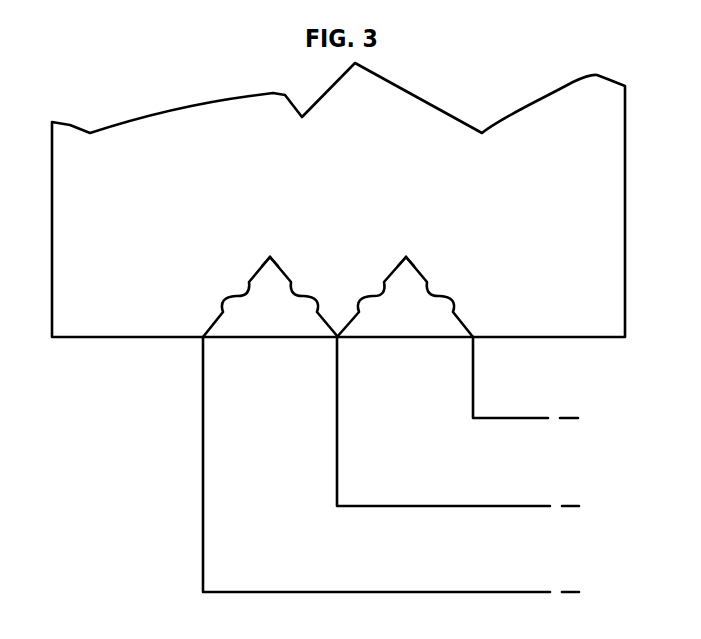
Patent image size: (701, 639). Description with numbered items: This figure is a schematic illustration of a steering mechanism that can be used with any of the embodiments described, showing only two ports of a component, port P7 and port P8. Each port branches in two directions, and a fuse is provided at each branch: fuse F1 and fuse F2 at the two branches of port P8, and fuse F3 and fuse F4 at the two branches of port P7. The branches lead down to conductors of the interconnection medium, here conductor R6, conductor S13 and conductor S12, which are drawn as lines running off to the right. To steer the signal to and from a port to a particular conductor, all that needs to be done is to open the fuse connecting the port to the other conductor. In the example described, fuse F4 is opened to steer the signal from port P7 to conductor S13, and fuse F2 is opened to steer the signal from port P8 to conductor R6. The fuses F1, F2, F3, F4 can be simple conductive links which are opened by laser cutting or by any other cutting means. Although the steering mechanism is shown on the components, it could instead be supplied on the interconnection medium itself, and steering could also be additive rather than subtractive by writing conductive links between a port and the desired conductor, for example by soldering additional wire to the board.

The fuse F1 is at (236, 296).
The fuse F2 is at (304, 297).
The fuse F3 is at (371, 296).
The fuse F4 is at (439, 297).
The port P8 is at (272, 242).
The port P7 is at (407, 242).
The conductor R6 is at (391, 464).
The conductor S13 is at (458, 421).
The conductor S12 is at (525, 377).